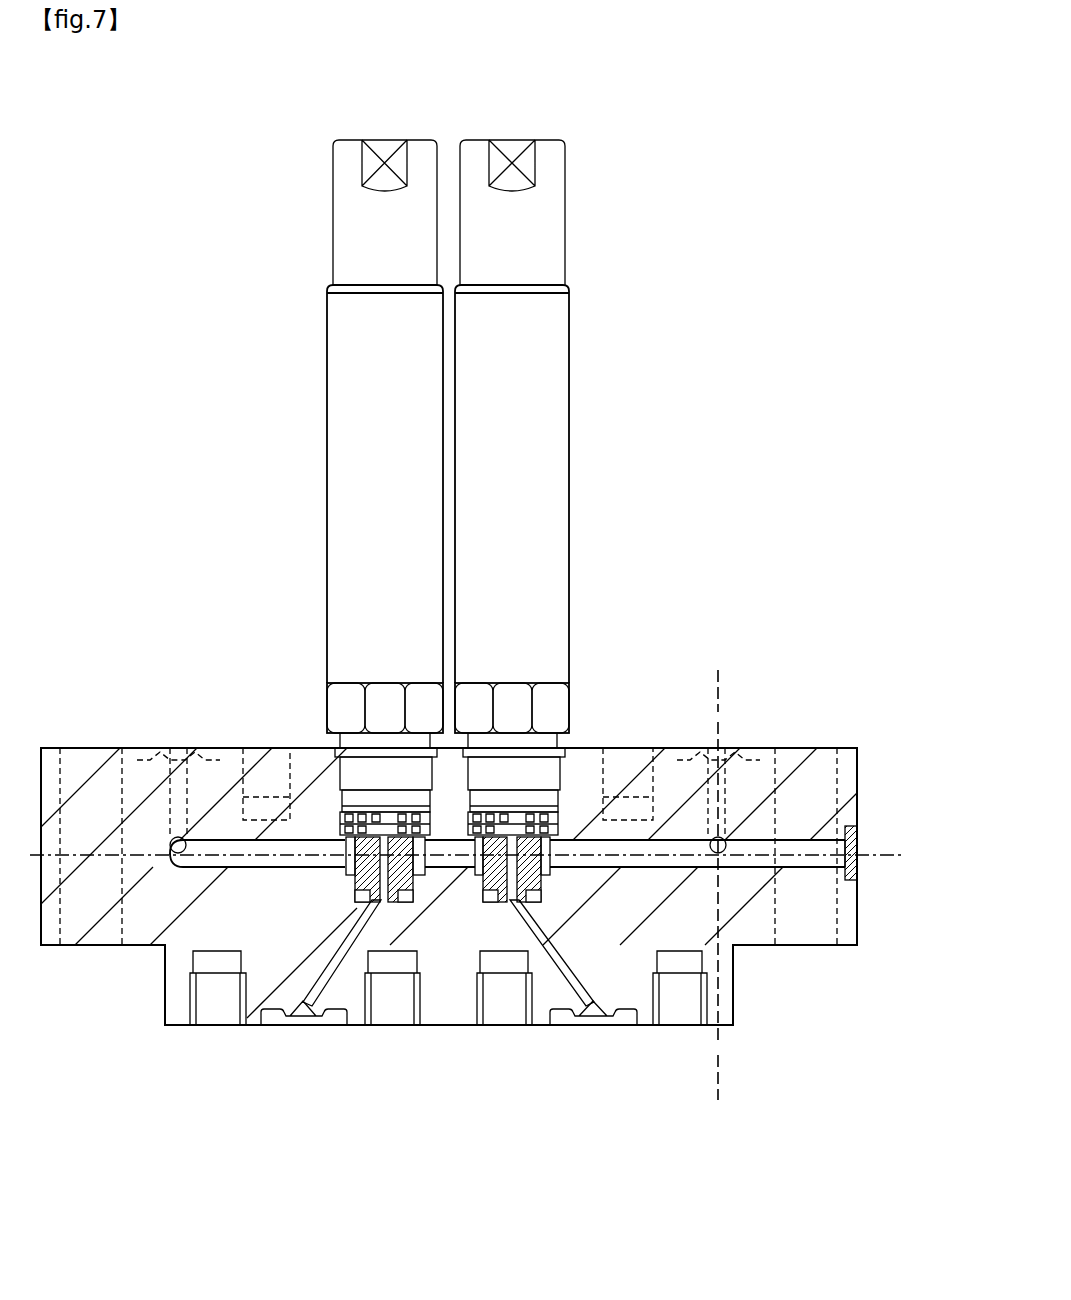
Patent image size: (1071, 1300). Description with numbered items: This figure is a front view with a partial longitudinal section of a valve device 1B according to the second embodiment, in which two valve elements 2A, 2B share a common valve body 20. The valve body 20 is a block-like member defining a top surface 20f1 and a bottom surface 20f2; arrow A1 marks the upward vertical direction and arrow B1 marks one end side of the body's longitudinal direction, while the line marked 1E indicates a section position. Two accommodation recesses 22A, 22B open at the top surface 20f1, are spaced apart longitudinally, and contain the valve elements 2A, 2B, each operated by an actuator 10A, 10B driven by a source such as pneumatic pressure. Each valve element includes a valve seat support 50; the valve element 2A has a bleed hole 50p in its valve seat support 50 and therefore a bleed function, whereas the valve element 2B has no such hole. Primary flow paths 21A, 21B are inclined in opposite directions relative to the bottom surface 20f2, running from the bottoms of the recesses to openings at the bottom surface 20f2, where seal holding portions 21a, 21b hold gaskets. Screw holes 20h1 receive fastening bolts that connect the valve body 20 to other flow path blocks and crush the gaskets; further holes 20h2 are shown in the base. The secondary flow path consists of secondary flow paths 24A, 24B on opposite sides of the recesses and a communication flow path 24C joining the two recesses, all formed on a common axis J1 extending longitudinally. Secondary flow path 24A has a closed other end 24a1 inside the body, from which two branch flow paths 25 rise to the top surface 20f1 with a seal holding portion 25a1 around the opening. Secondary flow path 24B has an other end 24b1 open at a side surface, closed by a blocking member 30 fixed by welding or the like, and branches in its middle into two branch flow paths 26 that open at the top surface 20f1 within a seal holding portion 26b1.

The valve device 1B is at (658, 190).
The actuator 10A is at (325, 373).
The actuator 10B is at (571, 373).
The valve element 2A is at (380, 805).
The valve element 2B is at (517, 802).
The valve body 20 is at (860, 808).
The top surface 20f1 is at (575, 748).
The bottom surface 20f2 is at (440, 960).
The screw holes 20h1 is at (210, 1000).
The second holding portions 20h2 is at (503, 997).
The primary flow path 21A is at (270, 1008).
The primary flow path 21B is at (660, 1030).
The seal holding portion 21a is at (342, 1015).
The seal holding portion 21b is at (613, 1030).
The accommodation recess 22A is at (347, 872).
The accommodation recess 22B is at (570, 957).
The secondary flow path 24A is at (210, 800).
The secondary flow path 24B is at (666, 867).
The communication flow path 24C is at (440, 862).
The other end 24a1 is at (235, 866).
The other end 24b1 is at (830, 880).
The branch flow paths 25 is at (168, 828).
The seal holding portion 25a1 is at (186, 790).
The branch flow paths 26 is at (770, 865).
The seal holding portion 26b1 is at (735, 760).
The blocking member 30 is at (860, 853).
The valve seat support 50 is at (345, 863).
The bleed hole 50p is at (462, 870).
The common axis J1 is at (880, 858).
The section line 1E is at (722, 696).
The upward direction A1 is at (263, 528).
The one end side B1 is at (545, 1250).